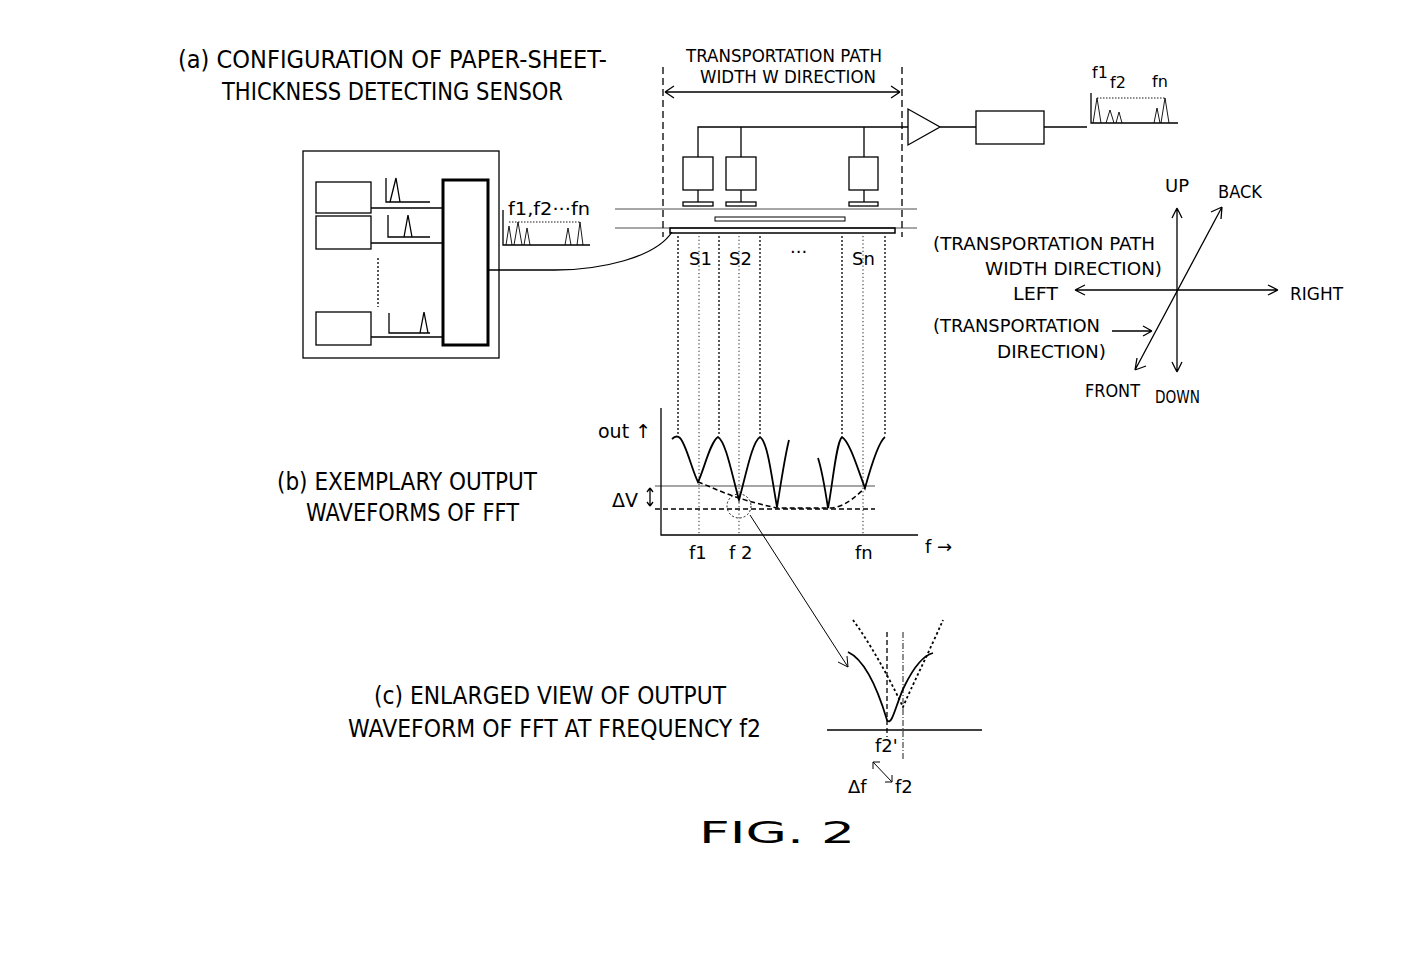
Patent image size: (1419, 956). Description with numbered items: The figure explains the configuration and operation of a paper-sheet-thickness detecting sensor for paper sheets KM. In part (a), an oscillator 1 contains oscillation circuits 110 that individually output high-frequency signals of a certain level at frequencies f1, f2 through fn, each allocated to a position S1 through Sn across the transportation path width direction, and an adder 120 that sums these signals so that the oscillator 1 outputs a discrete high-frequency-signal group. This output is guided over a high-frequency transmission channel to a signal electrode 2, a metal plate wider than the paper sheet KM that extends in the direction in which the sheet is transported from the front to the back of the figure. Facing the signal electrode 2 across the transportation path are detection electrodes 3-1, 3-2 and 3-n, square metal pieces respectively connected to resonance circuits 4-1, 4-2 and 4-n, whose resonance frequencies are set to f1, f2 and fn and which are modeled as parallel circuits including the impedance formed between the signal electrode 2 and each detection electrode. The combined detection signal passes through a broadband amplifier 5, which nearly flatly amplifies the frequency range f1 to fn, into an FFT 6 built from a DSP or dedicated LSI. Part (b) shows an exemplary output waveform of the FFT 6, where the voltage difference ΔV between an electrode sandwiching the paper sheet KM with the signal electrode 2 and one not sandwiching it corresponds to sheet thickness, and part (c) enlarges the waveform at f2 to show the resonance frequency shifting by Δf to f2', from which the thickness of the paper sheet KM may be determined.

The oscillator 1 is at (322, 150).
The oscillation circuits 110 is at (316, 328).
The adder 120 is at (471, 180).
The signal electrode 2 is at (895, 234).
The detection electrode 3-1 is at (683, 204).
The detection electrode 3-2 is at (756, 204).
The detection electrode 3-n is at (878, 204).
The resonance circuit 4-1 is at (683, 172).
The resonance circuit 4-2 is at (756, 172).
The resonance circuit 4-n is at (878, 172).
The amplifier 5 is at (922, 112).
The FFT 6 is at (1005, 111).
The paper sheet KM is at (868, 218).